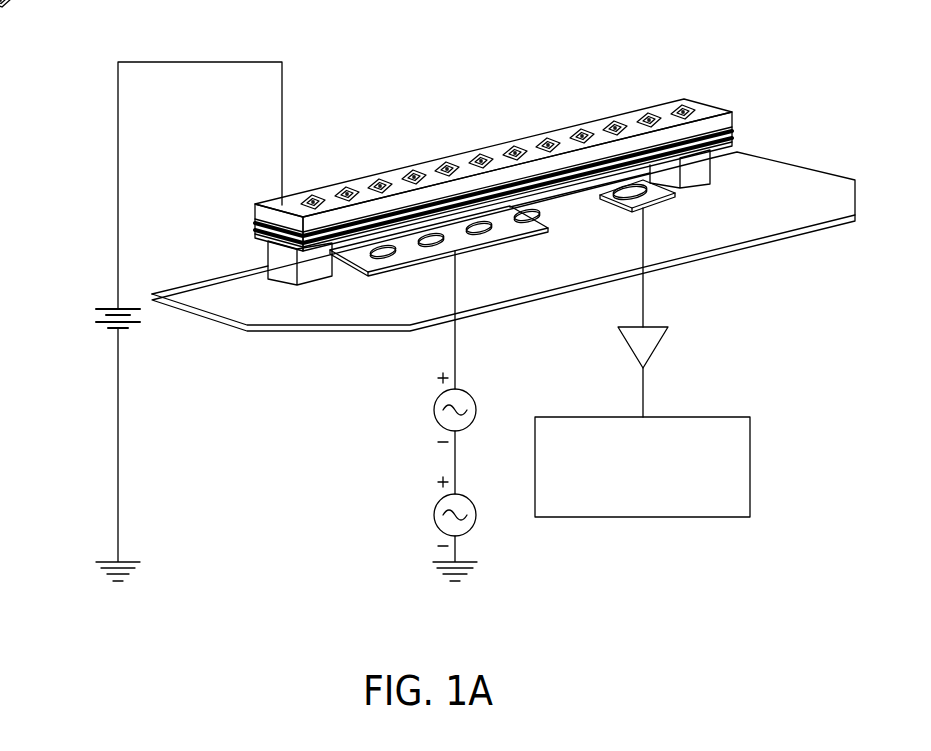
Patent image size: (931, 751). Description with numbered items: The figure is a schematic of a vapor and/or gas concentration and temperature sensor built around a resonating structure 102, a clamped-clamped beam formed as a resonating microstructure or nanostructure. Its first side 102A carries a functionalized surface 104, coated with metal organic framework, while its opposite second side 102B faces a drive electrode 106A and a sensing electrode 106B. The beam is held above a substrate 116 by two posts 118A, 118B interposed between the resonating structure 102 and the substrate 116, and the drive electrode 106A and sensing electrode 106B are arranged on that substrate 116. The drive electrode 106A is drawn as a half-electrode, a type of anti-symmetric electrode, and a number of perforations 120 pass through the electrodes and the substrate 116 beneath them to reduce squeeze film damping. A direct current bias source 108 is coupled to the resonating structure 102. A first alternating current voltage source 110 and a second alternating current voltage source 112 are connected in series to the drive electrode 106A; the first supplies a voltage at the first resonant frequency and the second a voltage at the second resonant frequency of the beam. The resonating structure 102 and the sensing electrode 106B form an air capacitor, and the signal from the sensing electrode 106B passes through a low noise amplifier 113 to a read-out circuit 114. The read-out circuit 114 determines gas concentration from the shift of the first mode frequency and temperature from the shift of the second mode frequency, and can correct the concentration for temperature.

The resonating structure 102 is at (665, 102).
The first side 102A is at (528, 138).
The second side 102B is at (736, 150).
The functionalized surface 104 is at (444, 176).
The drive electrode 106A is at (507, 240).
The sensing electrode 106B is at (668, 200).
The direct current bias source 108 is at (93, 315).
The first alternating current voltage source 110 is at (433, 515).
The second alternating current voltage source 112 is at (433, 410).
The low noise amplifier 113 is at (653, 352).
The read-out circuit 114 is at (624, 480).
The substrate 116 is at (832, 182).
The post 118A is at (277, 270).
The post 118B is at (703, 170).
The perforations 120 is at (350, 252).